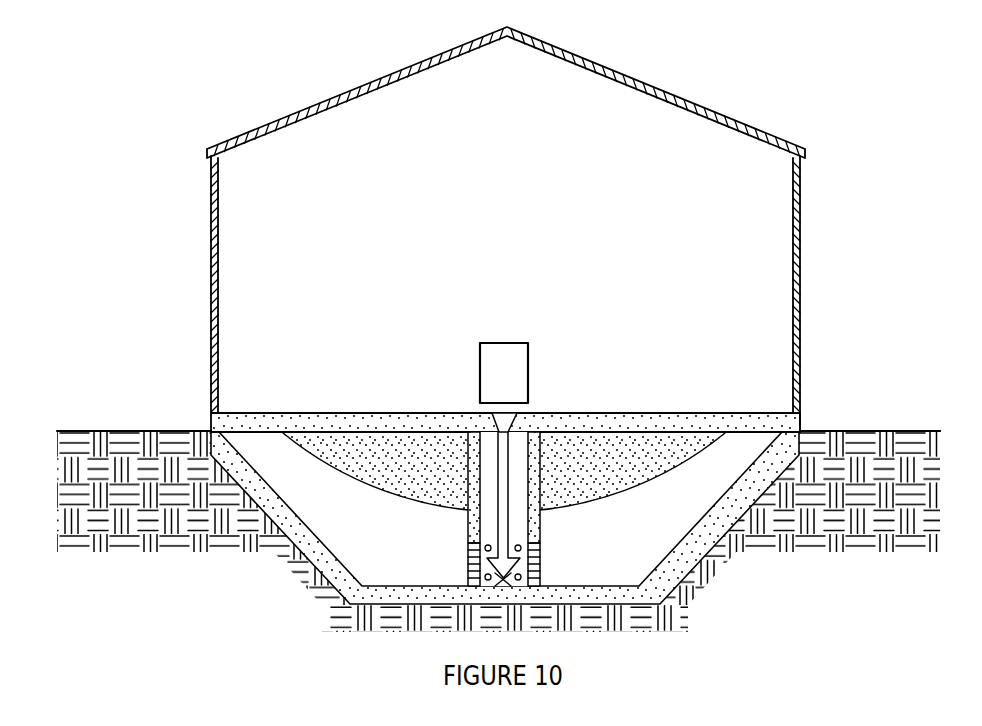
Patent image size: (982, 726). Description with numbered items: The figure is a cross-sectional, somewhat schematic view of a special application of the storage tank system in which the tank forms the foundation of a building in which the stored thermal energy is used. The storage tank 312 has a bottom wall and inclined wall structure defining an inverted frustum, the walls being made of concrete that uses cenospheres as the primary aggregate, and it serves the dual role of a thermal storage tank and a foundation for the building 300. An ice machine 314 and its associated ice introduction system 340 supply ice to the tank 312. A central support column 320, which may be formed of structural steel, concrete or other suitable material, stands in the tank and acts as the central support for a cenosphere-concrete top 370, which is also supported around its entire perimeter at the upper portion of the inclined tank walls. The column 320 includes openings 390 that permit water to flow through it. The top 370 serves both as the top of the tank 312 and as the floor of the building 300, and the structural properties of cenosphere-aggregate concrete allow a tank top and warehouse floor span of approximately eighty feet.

The building 300 is at (800, 264).
The storage tank 312 is at (810, 418).
The ice machine 314 is at (528, 379).
The central support column 320 is at (468, 531).
The ice introduction system 340 is at (470, 409).
The cenosphere-concrete top 370 is at (327, 413).
The openings 390 is at (520, 549).